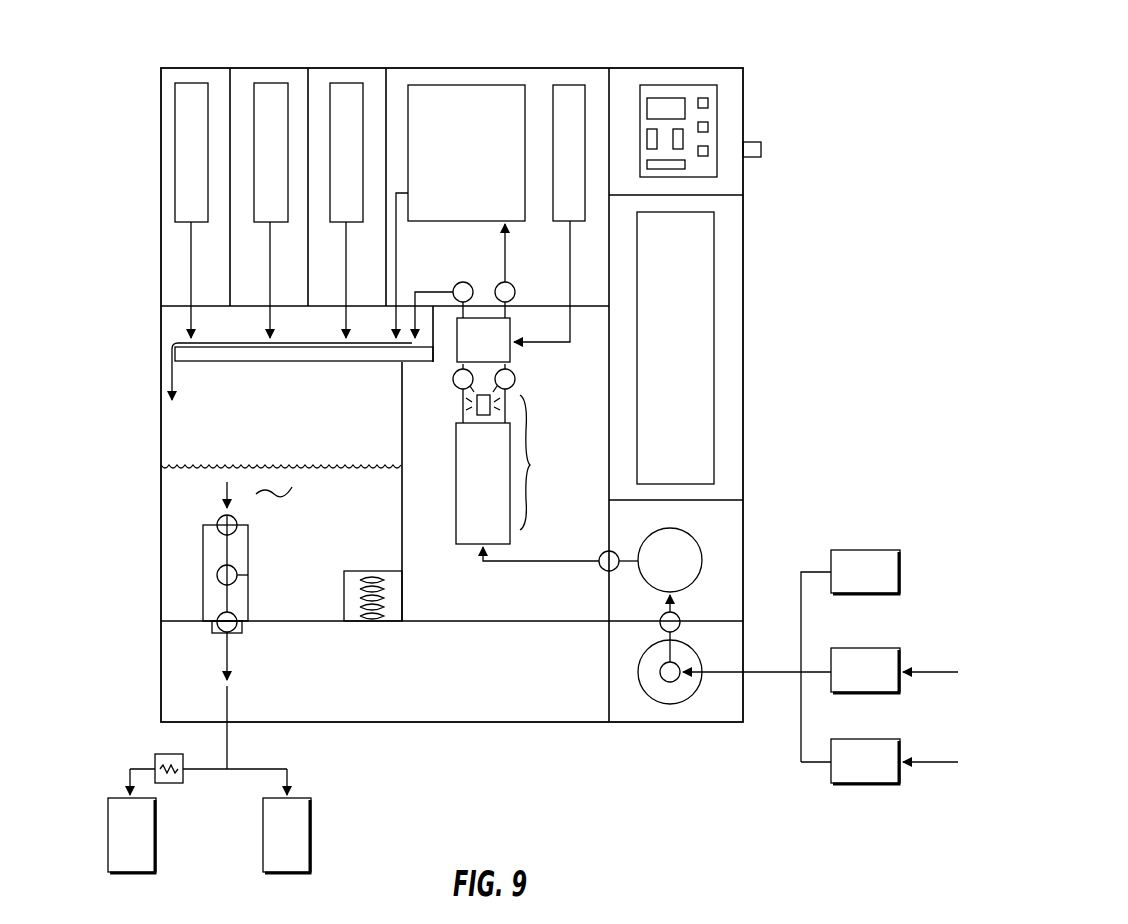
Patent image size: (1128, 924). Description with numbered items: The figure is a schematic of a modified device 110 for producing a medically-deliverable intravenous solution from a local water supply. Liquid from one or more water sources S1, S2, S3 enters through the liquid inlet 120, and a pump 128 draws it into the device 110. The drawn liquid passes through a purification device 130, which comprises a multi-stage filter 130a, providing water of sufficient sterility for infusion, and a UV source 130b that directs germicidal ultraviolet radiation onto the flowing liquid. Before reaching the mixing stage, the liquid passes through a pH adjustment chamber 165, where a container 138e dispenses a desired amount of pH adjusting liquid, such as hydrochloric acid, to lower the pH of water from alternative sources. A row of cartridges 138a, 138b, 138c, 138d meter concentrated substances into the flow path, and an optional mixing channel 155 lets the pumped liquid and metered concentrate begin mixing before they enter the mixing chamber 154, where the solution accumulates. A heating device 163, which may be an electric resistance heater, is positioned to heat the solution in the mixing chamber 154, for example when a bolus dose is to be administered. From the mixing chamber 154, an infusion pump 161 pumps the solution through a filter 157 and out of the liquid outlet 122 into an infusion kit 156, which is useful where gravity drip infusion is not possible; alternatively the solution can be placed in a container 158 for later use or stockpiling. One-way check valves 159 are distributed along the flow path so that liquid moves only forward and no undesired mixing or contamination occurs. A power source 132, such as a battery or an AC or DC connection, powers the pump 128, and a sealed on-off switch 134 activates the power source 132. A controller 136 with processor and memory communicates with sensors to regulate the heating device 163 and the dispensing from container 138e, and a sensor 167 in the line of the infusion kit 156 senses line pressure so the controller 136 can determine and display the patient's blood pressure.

The modified device 110 is at (843, 204).
The cartridge 138a is at (191, 84).
The cartridge 138b is at (270, 84).
The cartridge 138c is at (346, 84).
The cartridge 138d is at (486, 86).
The container 138e is at (569, 86).
The controller 136 is at (714, 105).
The on-off switch 134 is at (760, 143).
The power source 132 is at (714, 323).
The mixing channel 155 is at (298, 363).
The one-way check valve 159 is at (500, 283).
The pH adjustment chamber 165 is at (510, 325).
The purification device 130 is at (545, 462).
The multi-stage filter 130a is at (456, 527).
The UV source 130b is at (495, 405).
The pump 128 is at (700, 545).
The liquid inlet 120 is at (692, 697).
The water source S1 is at (888, 551).
The water source S2 is at (888, 649).
The water source S3 is at (888, 740).
The mixing chamber 154 is at (275, 489).
The infusion pump 161 is at (203, 605).
The filter 157 is at (245, 570).
The liquid outlet 122 is at (243, 627).
The heating device 163 is at (372, 571).
The sensor 167 is at (168, 754).
The infusion kit 156 is at (108, 833).
The container 158 is at (311, 830).